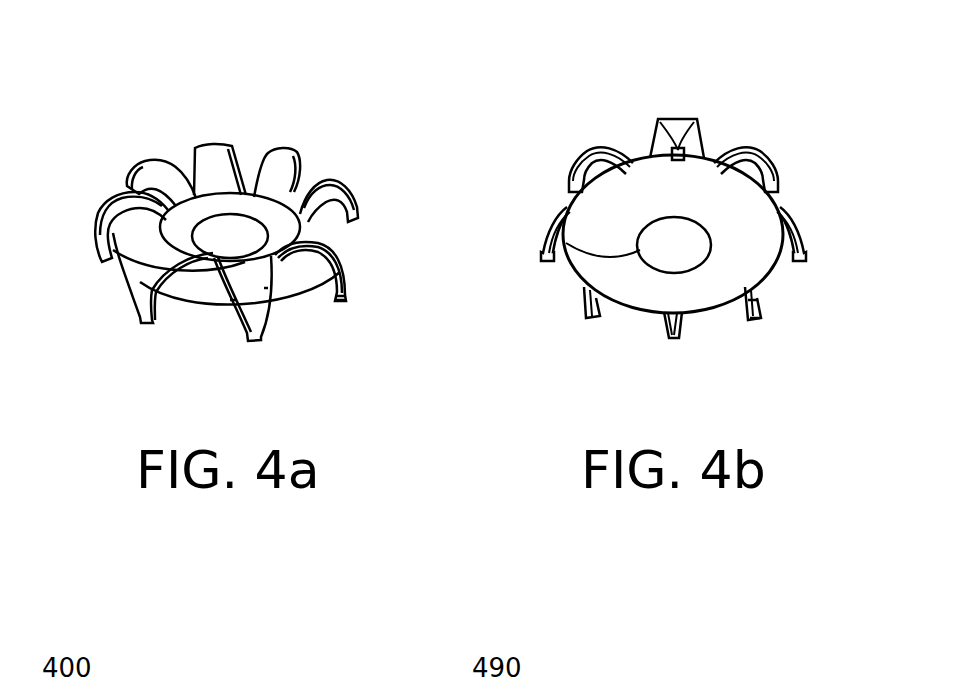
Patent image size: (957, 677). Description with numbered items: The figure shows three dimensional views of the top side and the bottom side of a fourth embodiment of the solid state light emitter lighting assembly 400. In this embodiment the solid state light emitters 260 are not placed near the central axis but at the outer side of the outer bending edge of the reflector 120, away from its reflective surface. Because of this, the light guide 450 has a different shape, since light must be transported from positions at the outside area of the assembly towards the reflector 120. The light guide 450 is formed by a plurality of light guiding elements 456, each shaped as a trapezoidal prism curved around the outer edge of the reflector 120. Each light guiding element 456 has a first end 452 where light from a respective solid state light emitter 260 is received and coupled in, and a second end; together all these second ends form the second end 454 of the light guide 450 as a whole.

In FIG. 4a, the solid state light emitter lighting assembly 400 is at (117, 62).
In FIG. 4b, the solid state light emitter lighting assembly 400 is at (566, 60).
In FIG. 4a, the reflector 120 is at (170, 330).
In FIG. 4b, the reflector 120 is at (626, 336).
In FIG. 4a, the light guide 450 is at (296, 125).
In FIG. 4b, the light guide 450 is at (673, 228).
In FIG. 4a, the leg end / foot 452 is at (348, 298).
In FIG. 4b, the leg end / foot 452 is at (762, 303).
In FIG. 4a, the second end of the light guide 454 is at (217, 310).
In FIG. 4a, the light guiding element 456 is at (257, 292).
In FIG. 4a, the solid state light emitter 260 is at (339, 304).
In FIG. 4b, the solid state light emitter 260 is at (755, 322).